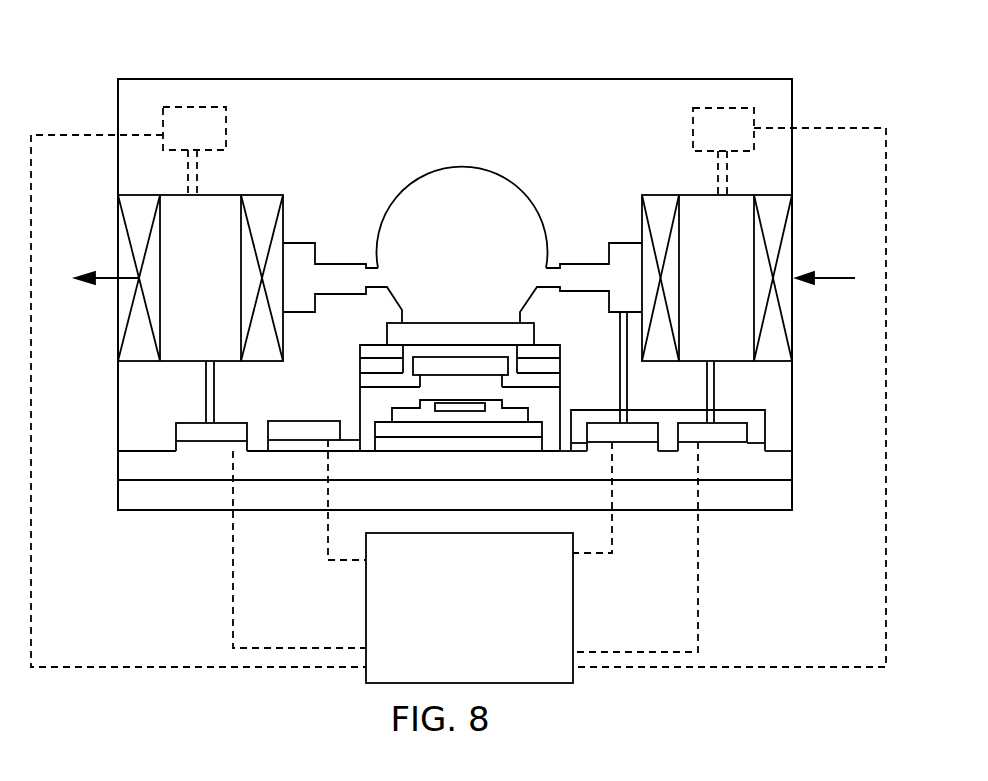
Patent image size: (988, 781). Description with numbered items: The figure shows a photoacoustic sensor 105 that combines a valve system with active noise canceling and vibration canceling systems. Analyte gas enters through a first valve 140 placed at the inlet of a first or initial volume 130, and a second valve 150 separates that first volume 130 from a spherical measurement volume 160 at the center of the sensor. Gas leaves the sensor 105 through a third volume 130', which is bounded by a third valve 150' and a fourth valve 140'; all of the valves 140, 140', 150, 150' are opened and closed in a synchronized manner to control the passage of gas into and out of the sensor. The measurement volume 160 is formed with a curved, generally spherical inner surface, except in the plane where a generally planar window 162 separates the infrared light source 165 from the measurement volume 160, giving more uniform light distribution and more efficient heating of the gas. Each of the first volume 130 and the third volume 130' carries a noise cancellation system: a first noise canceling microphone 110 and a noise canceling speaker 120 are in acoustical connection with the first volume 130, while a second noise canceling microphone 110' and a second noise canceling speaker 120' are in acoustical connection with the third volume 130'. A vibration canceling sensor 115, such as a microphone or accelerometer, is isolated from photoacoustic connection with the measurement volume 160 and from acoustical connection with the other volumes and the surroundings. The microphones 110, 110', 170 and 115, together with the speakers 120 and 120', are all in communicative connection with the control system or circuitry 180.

The photoacoustic sensor 105 is at (823, 78).
The first noise canceling microphone 110 is at (730, 508).
The second noise canceling microphone 110' is at (202, 506).
The vibration canceling sensor 115 is at (313, 440).
The noise canceling speaker 120 is at (749, 100).
The second noise canceling speaker 120' is at (204, 106).
The first volume 130 is at (786, 401).
The third volume 130' is at (133, 408).
The first valve 140 is at (761, 249).
The fourth valve 140' is at (165, 227).
The second valve 150 is at (581, 175).
The third valve 150' is at (338, 175).
The measurement volume 160 is at (435, 179).
The window 162 is at (387, 331).
The infrared light source 165 is at (420, 400).
The microphone 170 is at (623, 442).
The control system or circuitry 180 is at (447, 608).